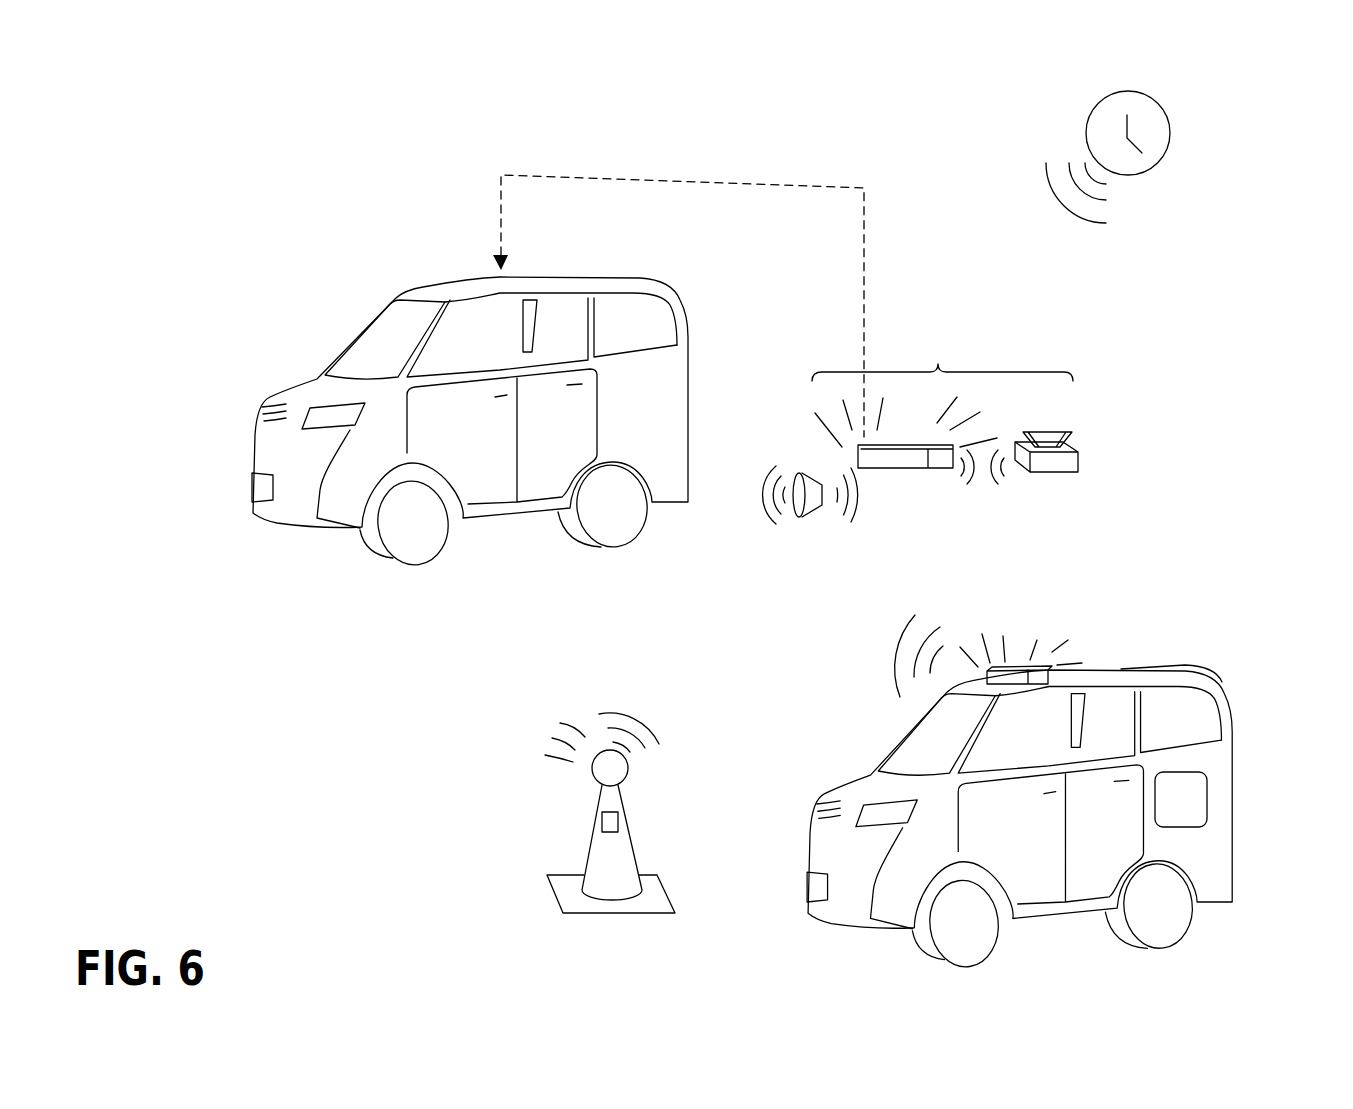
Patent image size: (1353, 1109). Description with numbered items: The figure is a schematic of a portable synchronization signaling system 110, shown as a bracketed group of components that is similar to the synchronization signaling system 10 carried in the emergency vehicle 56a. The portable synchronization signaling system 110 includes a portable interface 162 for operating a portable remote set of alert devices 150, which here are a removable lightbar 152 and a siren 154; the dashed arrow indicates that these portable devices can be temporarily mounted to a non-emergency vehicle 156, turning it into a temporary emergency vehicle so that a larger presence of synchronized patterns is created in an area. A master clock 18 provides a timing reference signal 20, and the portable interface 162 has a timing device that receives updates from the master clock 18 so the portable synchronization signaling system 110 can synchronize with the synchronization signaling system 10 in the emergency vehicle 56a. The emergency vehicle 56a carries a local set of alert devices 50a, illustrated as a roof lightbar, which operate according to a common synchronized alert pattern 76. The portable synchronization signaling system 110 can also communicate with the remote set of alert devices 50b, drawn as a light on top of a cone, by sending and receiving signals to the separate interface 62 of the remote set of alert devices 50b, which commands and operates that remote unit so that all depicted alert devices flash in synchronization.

The synchronization signaling system 10 is at (1066, 756).
The master clock 18 is at (1160, 101).
The timing reference signal 20 is at (1053, 194).
The local set of alert devices 50a is at (1014, 666).
The remote set of alert devices 50b is at (650, 813).
The emergency vehicle 56a is at (1121, 668).
The separate interface 62 is at (618, 822).
The common synchronized alert pattern 76 is at (1066, 751).
The portable synchronization signaling system 110 is at (949, 463).
The portable remote set of alert devices 150 is at (846, 545).
The removable lightbar 152 is at (857, 457).
The siren 154 is at (812, 515).
The non-emergency vehicle 156 is at (440, 292).
The portable interface 162 is at (1079, 461).